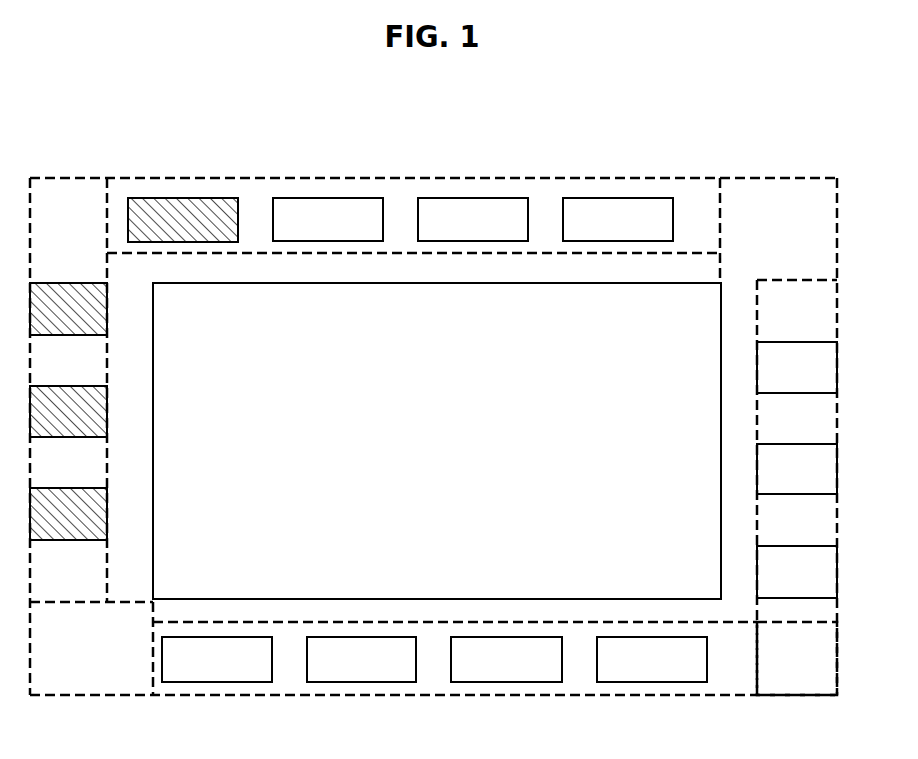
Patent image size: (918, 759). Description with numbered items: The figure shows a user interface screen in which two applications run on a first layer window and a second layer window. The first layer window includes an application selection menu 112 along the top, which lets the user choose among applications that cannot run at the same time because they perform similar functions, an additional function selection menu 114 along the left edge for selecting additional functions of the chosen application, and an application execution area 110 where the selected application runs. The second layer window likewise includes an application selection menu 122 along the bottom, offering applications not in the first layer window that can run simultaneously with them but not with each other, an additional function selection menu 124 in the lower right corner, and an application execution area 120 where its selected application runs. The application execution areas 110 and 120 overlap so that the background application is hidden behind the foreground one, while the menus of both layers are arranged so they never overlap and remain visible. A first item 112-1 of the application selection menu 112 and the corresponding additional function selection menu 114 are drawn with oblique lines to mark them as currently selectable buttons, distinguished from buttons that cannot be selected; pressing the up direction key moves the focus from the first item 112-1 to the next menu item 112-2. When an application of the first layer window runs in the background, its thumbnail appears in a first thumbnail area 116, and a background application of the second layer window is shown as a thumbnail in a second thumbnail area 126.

The application execution area 110 is at (433, 366).
The application selection menu 112 is at (400, 186).
The first item 112-1 is at (184, 197).
The next menu item 112-2 is at (329, 197).
The additional function selection menu 114 is at (68, 195).
The first thumbnail area 116 is at (802, 188).
The application execution area 120 is at (737, 297).
The application selection menu 122 is at (213, 697).
The additional function selection menu 124 is at (803, 680).
The second thumbnail area 126 is at (72, 685).